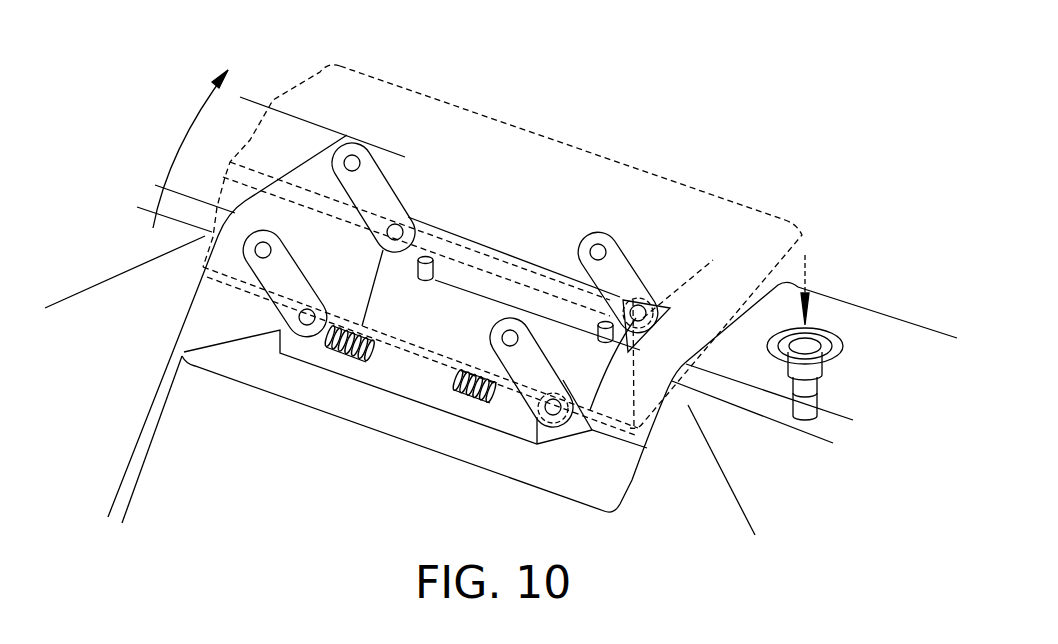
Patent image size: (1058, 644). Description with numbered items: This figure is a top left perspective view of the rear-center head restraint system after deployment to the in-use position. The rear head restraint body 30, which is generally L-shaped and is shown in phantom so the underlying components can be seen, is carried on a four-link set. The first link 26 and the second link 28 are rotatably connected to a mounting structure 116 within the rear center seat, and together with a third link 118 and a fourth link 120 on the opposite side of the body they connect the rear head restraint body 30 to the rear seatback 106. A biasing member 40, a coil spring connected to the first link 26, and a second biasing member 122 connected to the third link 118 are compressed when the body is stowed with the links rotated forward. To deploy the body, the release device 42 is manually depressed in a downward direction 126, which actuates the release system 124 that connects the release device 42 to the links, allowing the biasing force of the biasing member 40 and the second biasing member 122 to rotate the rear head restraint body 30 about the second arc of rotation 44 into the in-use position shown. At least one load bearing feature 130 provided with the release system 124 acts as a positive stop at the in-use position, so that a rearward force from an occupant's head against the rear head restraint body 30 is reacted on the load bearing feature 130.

The first link 26 is at (549, 318).
The second link 28 is at (613, 278).
The rear head restraint body 30 is at (383, 77).
The biasing member 40 is at (472, 395).
The release device 42 is at (807, 345).
The second arc of rotation 44 is at (187, 127).
The rear seatback 106 is at (257, 108).
The mounting structure 116 is at (358, 327).
The third link 118 is at (273, 278).
The fourth link 120 is at (382, 183).
The second biasing member 122 is at (350, 348).
The release system 124 is at (493, 320).
The downward direction 126 is at (810, 272).
The load bearing feature 130 is at (435, 262).